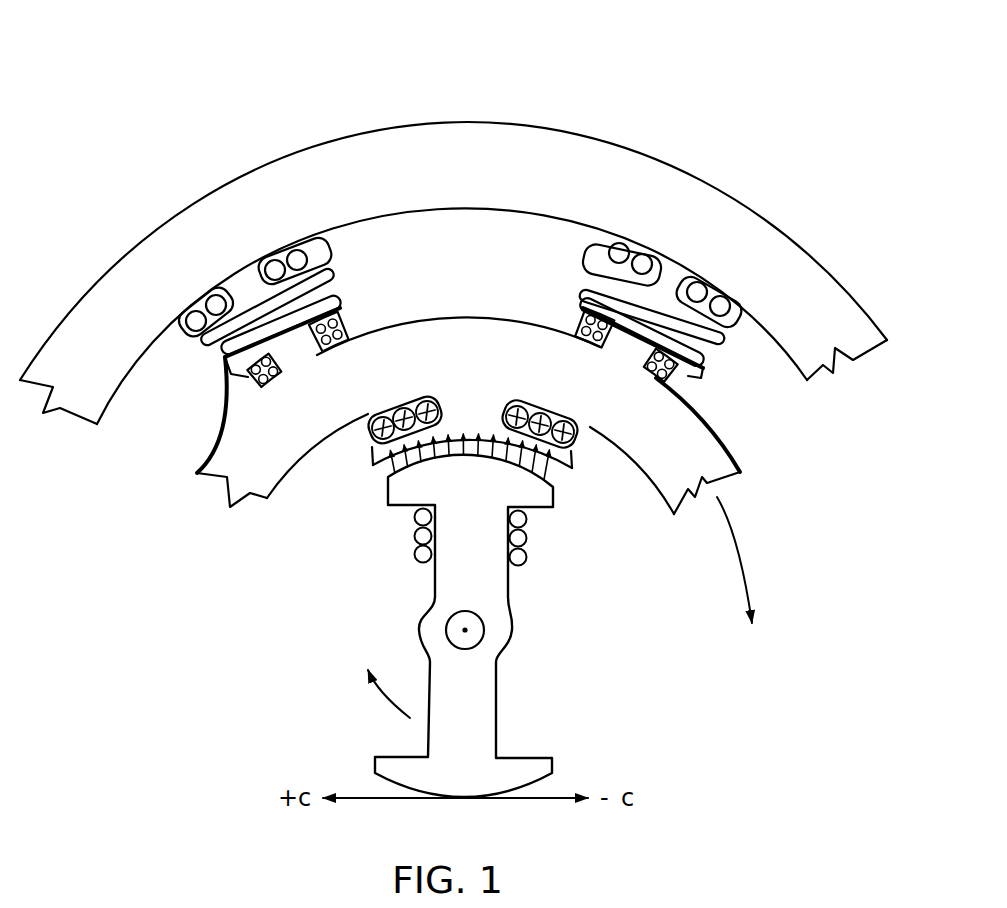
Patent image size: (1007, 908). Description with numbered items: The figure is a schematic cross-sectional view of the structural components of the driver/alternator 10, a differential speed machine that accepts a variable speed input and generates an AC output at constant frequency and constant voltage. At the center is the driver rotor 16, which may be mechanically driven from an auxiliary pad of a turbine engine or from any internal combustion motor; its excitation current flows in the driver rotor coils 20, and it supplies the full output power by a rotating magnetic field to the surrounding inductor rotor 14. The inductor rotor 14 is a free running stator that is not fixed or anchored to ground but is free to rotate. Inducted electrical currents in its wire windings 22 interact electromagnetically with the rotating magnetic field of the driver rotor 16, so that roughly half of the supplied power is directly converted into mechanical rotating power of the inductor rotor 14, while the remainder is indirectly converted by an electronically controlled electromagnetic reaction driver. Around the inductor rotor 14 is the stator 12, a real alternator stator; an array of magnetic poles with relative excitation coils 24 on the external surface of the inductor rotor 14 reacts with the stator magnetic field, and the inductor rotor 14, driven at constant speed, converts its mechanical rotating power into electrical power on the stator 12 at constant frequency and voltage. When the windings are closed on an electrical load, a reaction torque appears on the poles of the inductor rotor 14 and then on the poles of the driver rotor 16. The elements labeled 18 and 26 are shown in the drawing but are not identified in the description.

The driver/alternator 10 is at (636, 131).
The stator 12 is at (736, 195).
The inductor rotor 14 is at (706, 420).
The driver rotor 16 is at (500, 695).
The shaft 18 is at (488, 630).
The driver rotor coils 20 is at (534, 543).
The inductor rotor wire windings 22 is at (367, 438).
The excitation coils 24 is at (246, 381).
The outer ring coil 26 is at (317, 256).